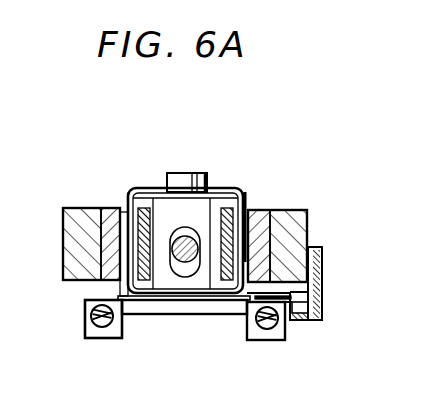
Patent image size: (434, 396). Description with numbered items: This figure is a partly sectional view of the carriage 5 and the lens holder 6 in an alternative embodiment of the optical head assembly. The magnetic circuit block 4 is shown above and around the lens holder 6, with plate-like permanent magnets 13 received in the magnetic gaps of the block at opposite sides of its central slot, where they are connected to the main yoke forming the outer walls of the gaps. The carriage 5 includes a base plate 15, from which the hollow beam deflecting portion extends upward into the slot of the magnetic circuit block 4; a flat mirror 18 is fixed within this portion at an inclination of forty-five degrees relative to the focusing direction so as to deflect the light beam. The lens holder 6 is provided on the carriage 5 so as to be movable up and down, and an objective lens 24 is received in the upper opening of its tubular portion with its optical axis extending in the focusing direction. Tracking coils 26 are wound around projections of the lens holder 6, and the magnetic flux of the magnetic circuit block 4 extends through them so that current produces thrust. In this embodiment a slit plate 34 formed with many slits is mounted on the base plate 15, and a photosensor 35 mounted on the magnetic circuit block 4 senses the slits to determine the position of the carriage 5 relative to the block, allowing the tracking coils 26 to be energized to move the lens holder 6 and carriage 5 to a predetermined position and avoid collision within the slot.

The magnetic circuit block 4 is at (288, 210).
The carriage 5 is at (80, 321).
The lens holder 6 is at (152, 188).
The permanent magnets 13 is at (110, 208).
The base plate 15 is at (211, 308).
The flat mirror 18 is at (185, 262).
The objective lens 24 is at (198, 172).
The tracking coils 26 is at (128, 303).
The slit plate 34 is at (302, 312).
The photosensor 35 is at (322, 278).